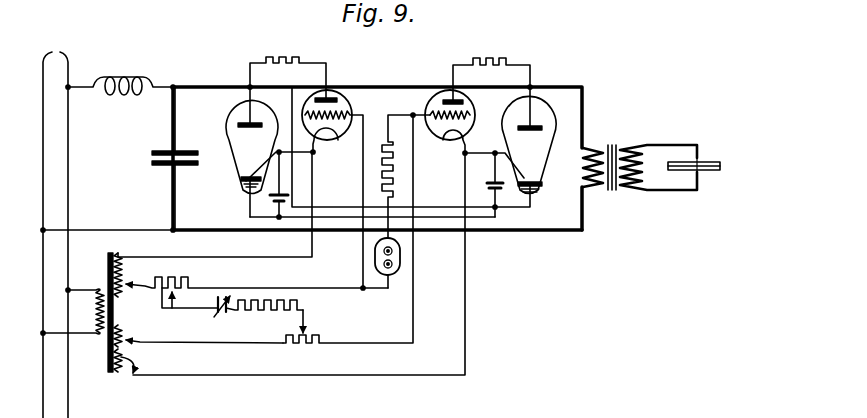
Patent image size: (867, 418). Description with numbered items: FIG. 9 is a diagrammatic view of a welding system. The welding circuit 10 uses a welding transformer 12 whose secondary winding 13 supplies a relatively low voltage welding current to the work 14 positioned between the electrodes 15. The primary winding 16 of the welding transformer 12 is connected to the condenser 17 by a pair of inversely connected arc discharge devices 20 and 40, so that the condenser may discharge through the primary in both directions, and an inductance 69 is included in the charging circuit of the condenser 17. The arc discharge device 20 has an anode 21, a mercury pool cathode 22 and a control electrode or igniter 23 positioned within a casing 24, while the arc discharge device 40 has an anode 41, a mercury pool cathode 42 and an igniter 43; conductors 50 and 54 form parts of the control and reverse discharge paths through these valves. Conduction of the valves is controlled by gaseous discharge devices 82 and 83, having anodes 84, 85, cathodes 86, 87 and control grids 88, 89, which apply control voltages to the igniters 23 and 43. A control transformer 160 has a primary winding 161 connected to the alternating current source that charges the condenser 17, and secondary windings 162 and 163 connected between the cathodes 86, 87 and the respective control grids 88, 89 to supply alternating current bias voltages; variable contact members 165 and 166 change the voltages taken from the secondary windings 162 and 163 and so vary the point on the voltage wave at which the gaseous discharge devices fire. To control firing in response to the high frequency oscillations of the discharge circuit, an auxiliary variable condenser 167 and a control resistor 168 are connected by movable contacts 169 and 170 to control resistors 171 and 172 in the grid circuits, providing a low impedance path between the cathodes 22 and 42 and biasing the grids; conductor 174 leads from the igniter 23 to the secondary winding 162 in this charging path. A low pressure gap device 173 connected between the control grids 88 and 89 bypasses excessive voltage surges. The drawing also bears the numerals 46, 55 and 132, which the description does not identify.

The input terminals 55 is at (108, 227).
The inductance 69 is at (120, 77).
The condenser 17 is at (160, 150).
The arc discharge device 20 is at (252, 151).
The anode 21 is at (259, 123).
The mercury pool cathode 22 is at (242, 183).
The igniter 23 is at (259, 172).
The casing 24 is at (228, 137).
The by-pass condenser 46 is at (275, 197).
The gaseous discharge device 82 is at (315, 173).
The anode 84 is at (337, 100).
The cathode 86 is at (329, 138).
The control grid 88 is at (349, 114).
The conductor 50 is at (333, 206).
The gaseous discharge device 83 is at (332, 216).
The anode 85 is at (458, 100).
The cathode 87 is at (449, 137).
The control grid 89 is at (433, 111).
The arc discharge device 40 is at (431, 149).
The anode 41 is at (528, 126).
The mercury pool cathode 42 is at (540, 188).
The igniter 43 is at (518, 173).
The conductor 54 is at (484, 217).
The conductor 132 is at (511, 233).
The welding circuit 10 is at (620, 95).
The welding transformer 12 is at (640, 164).
The primary winding 16 is at (594, 182).
The secondary winding 13 is at (631, 182).
The work 14 is at (722, 164).
The electrodes 15 is at (704, 158).
The control transformer 160 is at (162, 312).
The primary winding 161 is at (98, 334).
The secondary winding 162 is at (123, 262).
The variable contact member 166 is at (135, 338).
The secondary winding 163 is at (139, 372).
The variable contact member 165 is at (128, 286).
The control resistor 171 is at (180, 308).
The movable contact 169 is at (188, 308).
The auxiliary variable condenser 167 is at (226, 314).
The control resistor 168 is at (256, 312).
The movable contact 170 is at (305, 318).
The control resistor 172 is at (306, 346).
The low pressure gap device 173 is at (401, 251).
The conductor 174 is at (244, 257).